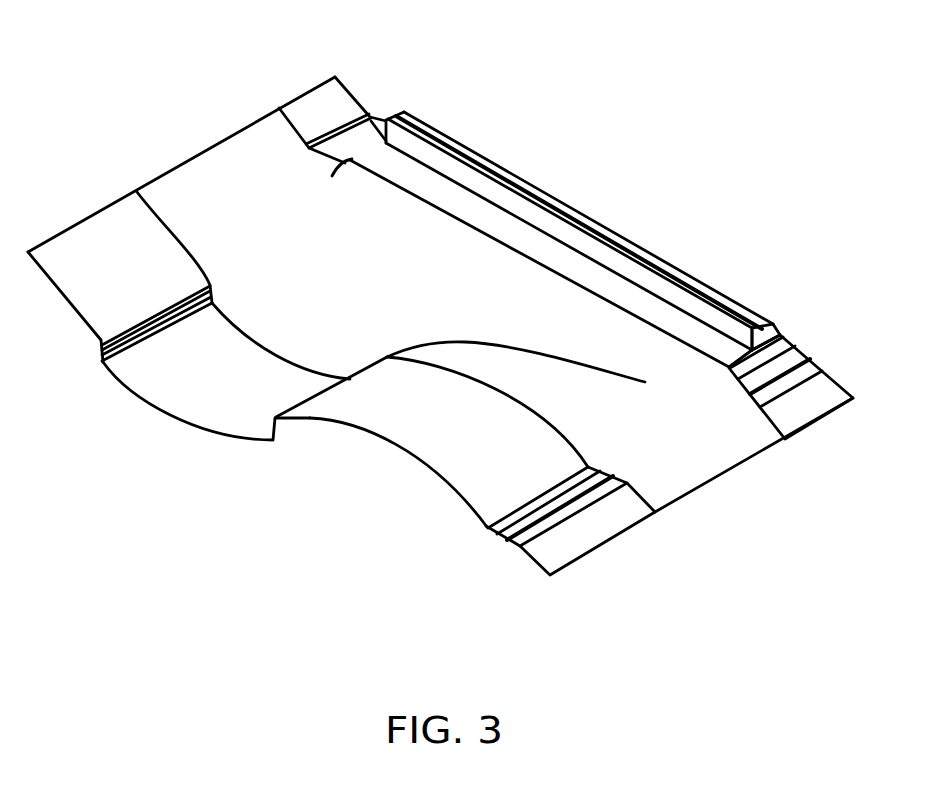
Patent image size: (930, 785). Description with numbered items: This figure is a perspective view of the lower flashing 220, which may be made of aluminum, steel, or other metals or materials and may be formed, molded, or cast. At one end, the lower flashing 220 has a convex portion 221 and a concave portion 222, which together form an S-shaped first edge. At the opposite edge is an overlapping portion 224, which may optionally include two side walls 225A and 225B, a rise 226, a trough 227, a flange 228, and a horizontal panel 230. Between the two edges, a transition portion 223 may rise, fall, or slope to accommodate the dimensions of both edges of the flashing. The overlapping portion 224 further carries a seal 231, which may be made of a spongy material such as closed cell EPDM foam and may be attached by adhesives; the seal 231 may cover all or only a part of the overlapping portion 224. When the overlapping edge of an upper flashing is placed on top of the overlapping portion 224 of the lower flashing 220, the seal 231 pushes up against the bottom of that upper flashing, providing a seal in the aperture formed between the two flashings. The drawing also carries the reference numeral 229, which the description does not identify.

The lower flashing 220 is at (686, 97).
The convex portion 221 is at (163, 410).
The concave portion 222 is at (384, 441).
The transition portion 223 is at (447, 285).
The overlapping portion 224 is at (778, 335).
The side wall 225A is at (395, 103).
The side wall 225B is at (784, 336).
The rise 226 is at (811, 356).
The trough 227 is at (748, 392).
The flange 228 is at (531, 562).
The top tab 229 is at (210, 147).
The horizontal panel 230 is at (377, 120).
The seal 231 is at (755, 315).